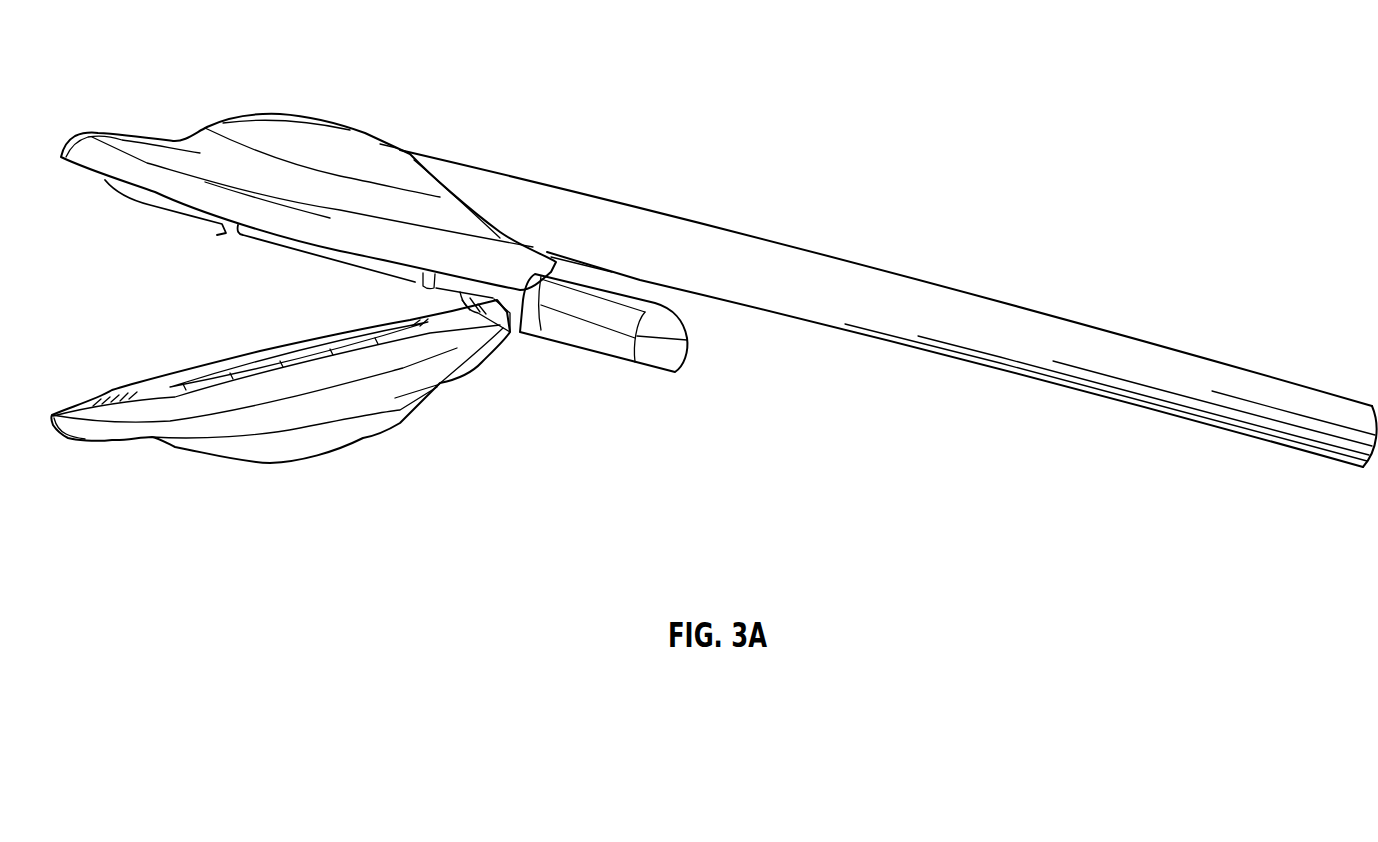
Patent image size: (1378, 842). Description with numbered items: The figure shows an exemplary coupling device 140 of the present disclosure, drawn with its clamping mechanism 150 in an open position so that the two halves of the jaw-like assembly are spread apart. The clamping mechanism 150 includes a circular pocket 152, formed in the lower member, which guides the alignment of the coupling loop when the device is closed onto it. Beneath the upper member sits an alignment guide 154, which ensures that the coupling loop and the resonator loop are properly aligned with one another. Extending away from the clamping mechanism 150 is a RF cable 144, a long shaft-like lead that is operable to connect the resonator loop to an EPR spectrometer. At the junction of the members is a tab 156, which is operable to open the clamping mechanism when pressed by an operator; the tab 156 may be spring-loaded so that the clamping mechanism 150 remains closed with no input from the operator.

The coupling device 140 is at (1183, 80).
The RF cable 144 is at (347, 232).
The clamping mechanism 150 is at (222, 118).
The circular pocket 152 is at (227, 378).
The alignment guide 154 is at (156, 207).
The tab 156 is at (652, 373).